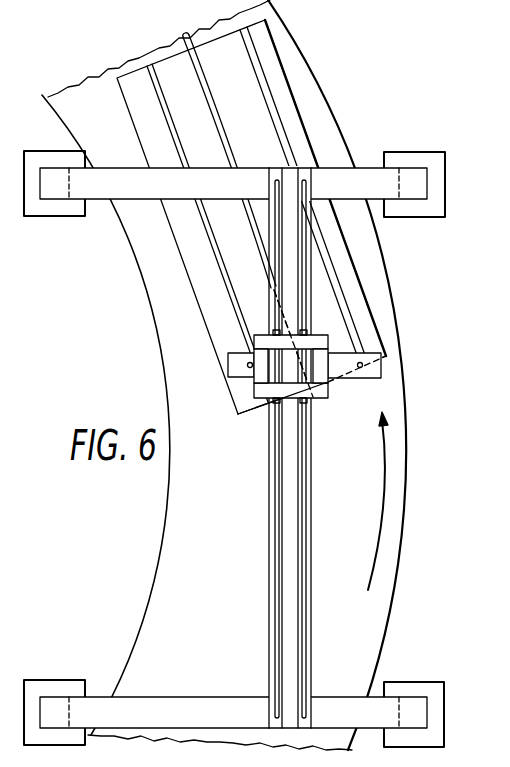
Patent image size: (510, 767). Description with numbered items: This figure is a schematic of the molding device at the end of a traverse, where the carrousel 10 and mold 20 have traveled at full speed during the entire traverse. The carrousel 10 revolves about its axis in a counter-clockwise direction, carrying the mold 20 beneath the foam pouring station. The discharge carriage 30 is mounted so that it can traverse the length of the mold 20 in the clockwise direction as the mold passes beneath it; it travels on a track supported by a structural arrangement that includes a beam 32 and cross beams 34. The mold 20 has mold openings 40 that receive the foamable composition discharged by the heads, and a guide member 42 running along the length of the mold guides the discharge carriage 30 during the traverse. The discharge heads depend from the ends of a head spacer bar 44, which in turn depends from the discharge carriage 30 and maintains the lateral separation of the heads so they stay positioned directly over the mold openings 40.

The carrousel 10 is at (134, 254).
The mold 20 is at (190, 301).
The discharge carriage 30 is at (316, 328).
The beam 32 is at (270, 512).
The cross beams 34 is at (102, 200).
The mold openings 40 is at (152, 80).
The guide member 42 is at (213, 107).
The head spacer bar 44 is at (360, 335).